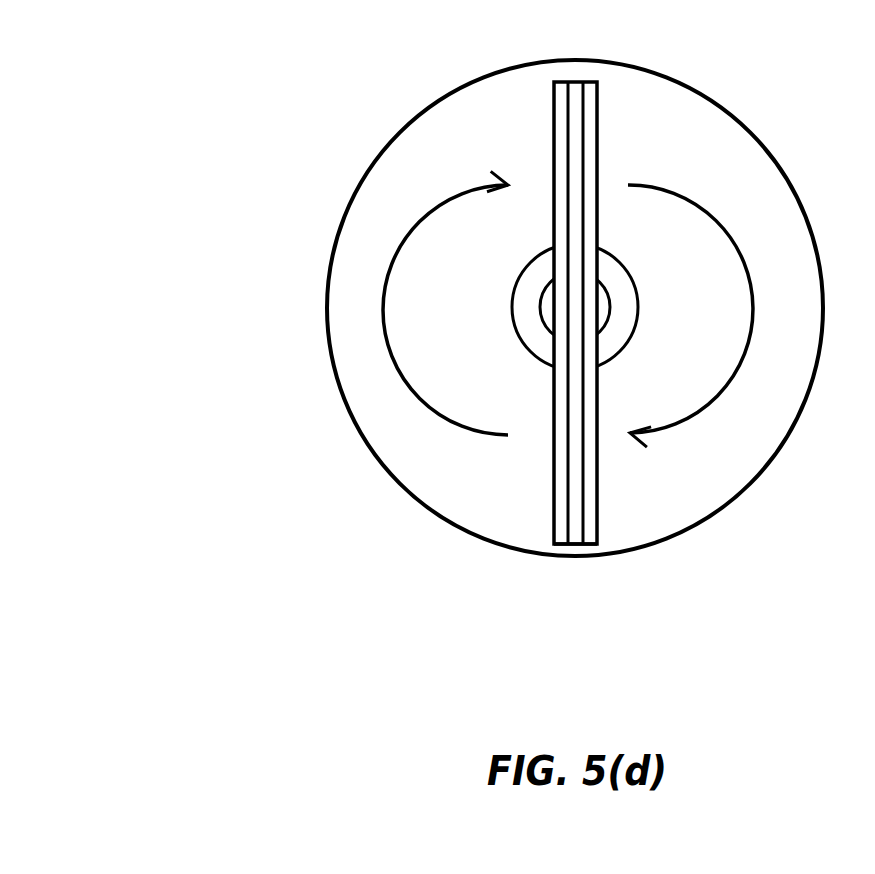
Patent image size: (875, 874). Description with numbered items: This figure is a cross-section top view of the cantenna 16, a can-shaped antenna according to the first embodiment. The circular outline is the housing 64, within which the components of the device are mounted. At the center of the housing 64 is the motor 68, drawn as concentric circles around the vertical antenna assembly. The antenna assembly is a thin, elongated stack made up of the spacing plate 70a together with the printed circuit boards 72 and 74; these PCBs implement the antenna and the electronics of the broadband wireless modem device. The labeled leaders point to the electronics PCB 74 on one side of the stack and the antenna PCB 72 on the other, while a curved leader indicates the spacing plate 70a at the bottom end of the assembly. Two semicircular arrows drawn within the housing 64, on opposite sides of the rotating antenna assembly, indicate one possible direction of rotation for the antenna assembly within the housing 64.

The cantenna 16 is at (292, 130).
The housing 64 is at (347, 403).
The motor 68 is at (548, 363).
The printed circuit board 72 is at (595, 138).
The printed circuit board 74 is at (555, 138).
The spacing plate 70a is at (577, 546).